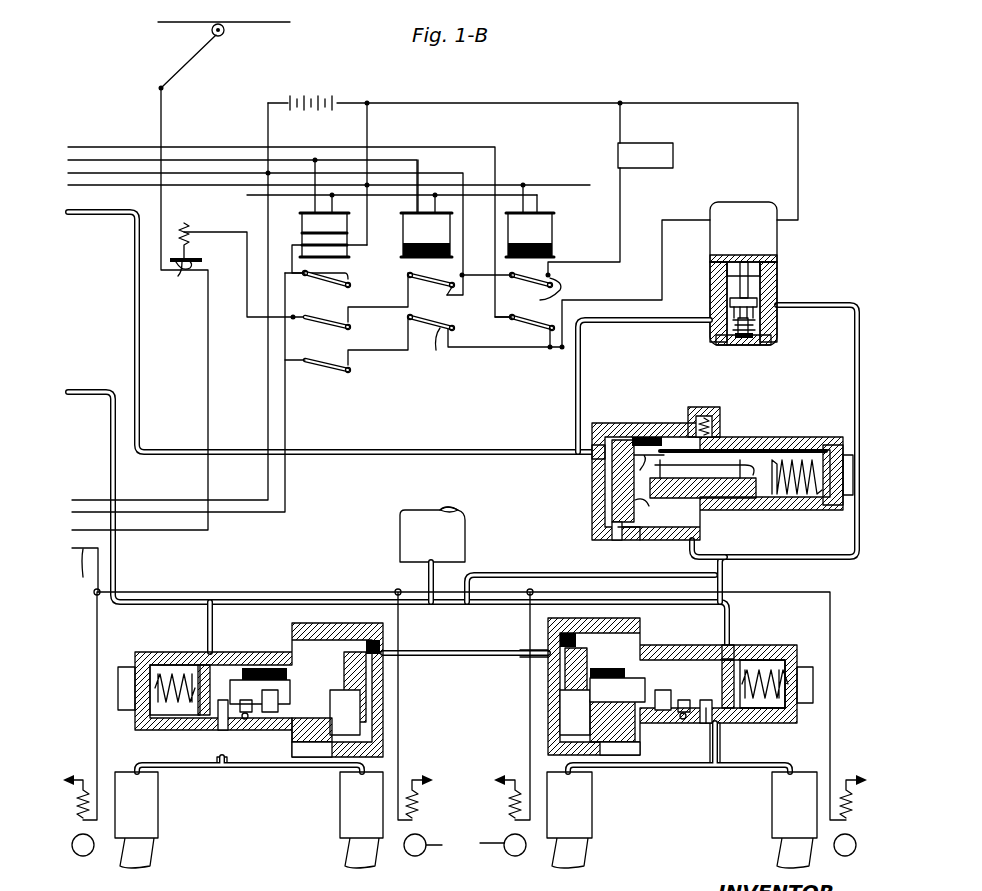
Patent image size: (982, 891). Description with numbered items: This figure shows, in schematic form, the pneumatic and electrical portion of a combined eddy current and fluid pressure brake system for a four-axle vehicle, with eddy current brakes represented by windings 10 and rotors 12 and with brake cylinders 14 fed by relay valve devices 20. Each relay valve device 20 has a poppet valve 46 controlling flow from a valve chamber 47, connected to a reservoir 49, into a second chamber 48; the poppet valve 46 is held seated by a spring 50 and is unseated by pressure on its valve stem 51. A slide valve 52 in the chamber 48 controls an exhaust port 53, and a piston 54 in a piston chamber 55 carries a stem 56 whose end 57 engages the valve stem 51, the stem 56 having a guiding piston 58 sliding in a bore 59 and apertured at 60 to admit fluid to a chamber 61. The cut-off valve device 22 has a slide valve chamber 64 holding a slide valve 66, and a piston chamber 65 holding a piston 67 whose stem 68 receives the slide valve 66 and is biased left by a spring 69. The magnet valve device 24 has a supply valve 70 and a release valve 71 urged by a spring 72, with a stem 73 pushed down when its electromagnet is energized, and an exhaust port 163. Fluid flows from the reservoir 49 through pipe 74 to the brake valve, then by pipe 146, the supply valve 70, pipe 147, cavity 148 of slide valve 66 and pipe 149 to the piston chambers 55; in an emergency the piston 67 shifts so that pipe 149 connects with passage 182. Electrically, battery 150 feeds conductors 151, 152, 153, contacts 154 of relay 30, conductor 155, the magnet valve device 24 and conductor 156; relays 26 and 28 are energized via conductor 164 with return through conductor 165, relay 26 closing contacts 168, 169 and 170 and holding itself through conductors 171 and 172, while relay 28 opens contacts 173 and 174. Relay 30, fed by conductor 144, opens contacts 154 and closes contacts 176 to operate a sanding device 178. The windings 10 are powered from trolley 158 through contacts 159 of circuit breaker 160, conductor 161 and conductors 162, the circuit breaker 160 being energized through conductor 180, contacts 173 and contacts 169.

The winding 10 is at (428, 808).
The rotor 12 is at (480, 846).
The brake cylinder 14 is at (158, 820).
The relay valve device 20 is at (468, 696).
The cut-off valve device 22 is at (696, 472).
The magnet valve device 24 is at (768, 261).
The relay 26 is at (304, 214).
The relay 28 is at (404, 214).
The relay 30 is at (554, 210).
The poppet valve 46 is at (772, 698).
The valve chamber 47 is at (802, 666).
The second chamber 48 is at (238, 626).
The reservoir 49 is at (402, 535).
The spring 50 is at (766, 666).
The valve stem 51 is at (728, 660).
The slide valve 52 is at (662, 710).
The exhaust port 53 is at (682, 716).
The piston 54 is at (570, 670).
The piston chamber 55 is at (562, 708).
The stem 56 is at (664, 668).
The end 57 is at (704, 700).
The guiding piston 58 is at (558, 638).
The bore 59 is at (660, 708).
The aperture 60 is at (600, 740).
The chamber 61 is at (600, 720).
The slide valve chamber 64 is at (678, 428).
The piston chamber 65 is at (606, 428).
The slide valve 66 is at (748, 495).
The piston 67 is at (612, 480).
The stem 68 is at (720, 454).
The spring 69 is at (784, 454).
The supply valve 70 is at (758, 324).
The release valve 71 is at (754, 283).
The spring 72 is at (744, 345).
The stem 73 is at (744, 257).
The pipe 74 is at (108, 386).
The conductor 144 is at (152, 179).
The pipe 146 is at (98, 214).
The pipe 147 is at (845, 556).
The cavity 148 is at (676, 538).
The pipe 149 is at (540, 579).
The battery 150 is at (335, 74).
The conductor 151 is at (268, 128).
The conductor 152 is at (98, 174).
The conductor 153 is at (100, 146).
The contacts 154 is at (540, 328).
The conductor 155 is at (616, 290).
The conductor 156 is at (587, 102).
The trolley 158 is at (188, 64).
The contacts 159 is at (178, 276).
The circuit breaker 160 is at (184, 226).
The conductor 161 is at (208, 372).
The conductors 162 is at (98, 578).
The exhaust port 163 is at (762, 268).
The conductor 164 is at (150, 142).
The conductor 165 is at (367, 117).
The contacts 168 is at (352, 270).
The contacts 169 is at (346, 324).
The contacts 170 is at (346, 366).
The conductor 171 is at (96, 500).
The conductor 172 is at (170, 504).
The contacts 173 is at (446, 290).
The contacts 174 is at (436, 350).
The contacts 176 is at (550, 288).
The sanding device 178 is at (634, 140).
The conductor 180 is at (445, 155).
The passage 182 is at (606, 549).